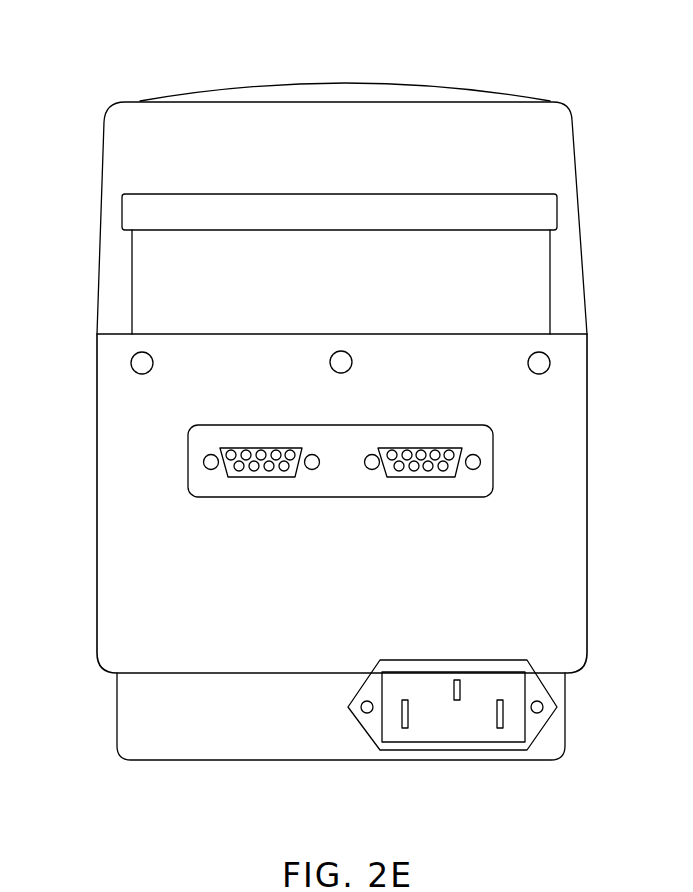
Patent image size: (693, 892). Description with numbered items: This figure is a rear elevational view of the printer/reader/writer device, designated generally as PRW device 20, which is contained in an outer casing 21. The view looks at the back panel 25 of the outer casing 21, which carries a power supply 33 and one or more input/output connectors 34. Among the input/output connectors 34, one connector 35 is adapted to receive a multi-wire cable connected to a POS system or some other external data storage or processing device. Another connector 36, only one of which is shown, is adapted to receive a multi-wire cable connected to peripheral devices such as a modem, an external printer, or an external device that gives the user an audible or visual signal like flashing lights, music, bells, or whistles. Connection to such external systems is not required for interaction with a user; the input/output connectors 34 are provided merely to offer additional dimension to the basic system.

The PRW device 20 is at (612, 161).
The outer casing 21 is at (588, 533).
The back panel 25 is at (562, 457).
The power supply 33 is at (483, 735).
The input/output connectors 34 is at (366, 425).
The connector 35 is at (258, 478).
The connector 36 is at (428, 478).